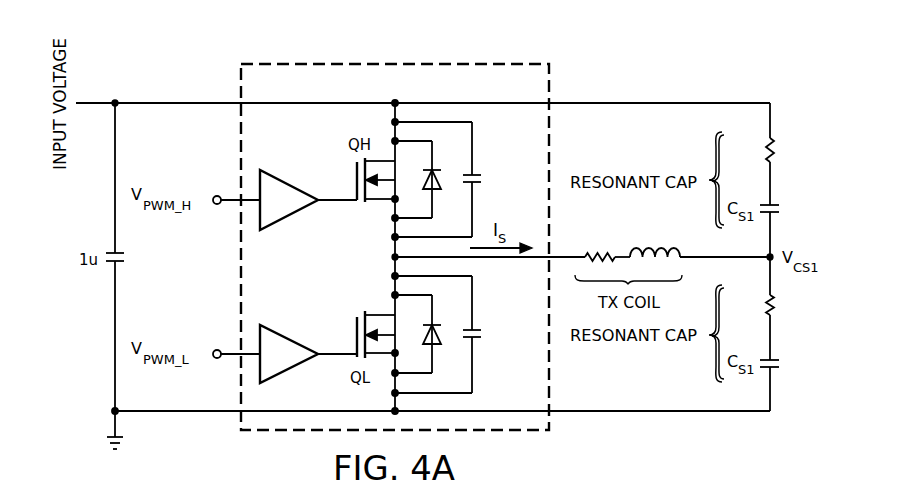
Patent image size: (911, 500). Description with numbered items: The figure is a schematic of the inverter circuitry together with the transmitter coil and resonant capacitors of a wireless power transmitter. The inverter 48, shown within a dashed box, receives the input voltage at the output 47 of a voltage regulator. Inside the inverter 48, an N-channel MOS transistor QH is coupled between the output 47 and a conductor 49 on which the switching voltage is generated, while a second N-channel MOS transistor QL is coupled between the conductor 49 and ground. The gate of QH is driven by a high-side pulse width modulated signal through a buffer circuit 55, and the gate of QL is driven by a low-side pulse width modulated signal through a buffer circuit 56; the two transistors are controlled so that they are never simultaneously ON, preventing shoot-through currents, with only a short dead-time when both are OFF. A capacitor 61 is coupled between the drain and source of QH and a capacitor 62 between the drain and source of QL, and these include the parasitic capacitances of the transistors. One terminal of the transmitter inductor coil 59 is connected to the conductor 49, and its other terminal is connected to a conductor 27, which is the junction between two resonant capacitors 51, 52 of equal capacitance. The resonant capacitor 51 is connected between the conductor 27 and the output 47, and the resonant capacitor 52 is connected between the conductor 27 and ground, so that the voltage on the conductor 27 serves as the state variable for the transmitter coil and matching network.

The output of voltage regulator 47 is at (95, 103).
The inverter 48 is at (335, 60).
The buffer circuit 55 is at (290, 179).
The buffer circuit 56 is at (290, 375).
The conductor 49 is at (392, 256).
The capacitor 61 is at (484, 181).
The capacitor 62 is at (484, 336).
The transmitter inductor coil 59 is at (673, 250).
The resonant capacitor 51 is at (782, 208).
The conductor 27 is at (774, 287).
The resonant capacitor 52 is at (782, 366).